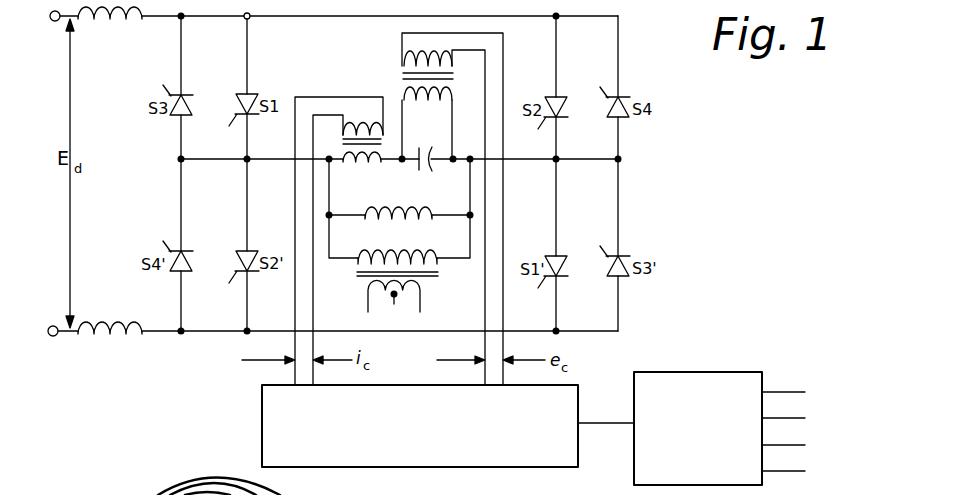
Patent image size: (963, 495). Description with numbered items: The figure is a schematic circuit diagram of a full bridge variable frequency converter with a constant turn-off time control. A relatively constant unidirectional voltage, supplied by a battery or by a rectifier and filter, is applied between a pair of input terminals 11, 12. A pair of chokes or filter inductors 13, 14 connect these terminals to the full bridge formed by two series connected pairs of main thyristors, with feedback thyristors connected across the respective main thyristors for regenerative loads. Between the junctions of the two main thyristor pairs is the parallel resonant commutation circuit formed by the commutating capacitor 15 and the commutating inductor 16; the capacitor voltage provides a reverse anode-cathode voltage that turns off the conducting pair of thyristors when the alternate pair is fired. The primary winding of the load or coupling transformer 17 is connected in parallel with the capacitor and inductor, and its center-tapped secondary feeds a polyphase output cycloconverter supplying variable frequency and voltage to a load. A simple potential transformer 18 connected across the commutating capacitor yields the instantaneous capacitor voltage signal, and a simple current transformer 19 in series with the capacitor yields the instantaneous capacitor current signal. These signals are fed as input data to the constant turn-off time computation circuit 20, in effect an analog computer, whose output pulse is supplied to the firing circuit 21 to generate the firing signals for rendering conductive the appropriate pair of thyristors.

The input terminal 11 is at (56, 22).
The input terminal 12 is at (54, 324).
The filter inductor 13 is at (104, 24).
The filter inductor 14 is at (113, 326).
The commutating capacitor 15 is at (419, 165).
The commutating inductor 16 is at (418, 213).
The coupling transformer 17 is at (398, 252).
The potential transformer 18 is at (401, 77).
The current transformer 19 is at (366, 166).
The constant turn-off time computation circuit 20 is at (262, 406).
The firing circuit 21 is at (693, 374).